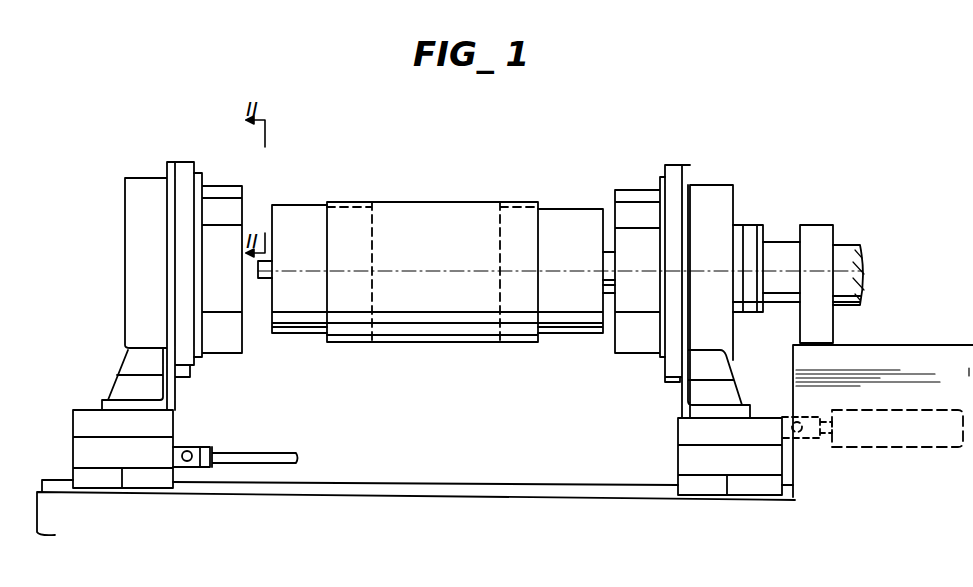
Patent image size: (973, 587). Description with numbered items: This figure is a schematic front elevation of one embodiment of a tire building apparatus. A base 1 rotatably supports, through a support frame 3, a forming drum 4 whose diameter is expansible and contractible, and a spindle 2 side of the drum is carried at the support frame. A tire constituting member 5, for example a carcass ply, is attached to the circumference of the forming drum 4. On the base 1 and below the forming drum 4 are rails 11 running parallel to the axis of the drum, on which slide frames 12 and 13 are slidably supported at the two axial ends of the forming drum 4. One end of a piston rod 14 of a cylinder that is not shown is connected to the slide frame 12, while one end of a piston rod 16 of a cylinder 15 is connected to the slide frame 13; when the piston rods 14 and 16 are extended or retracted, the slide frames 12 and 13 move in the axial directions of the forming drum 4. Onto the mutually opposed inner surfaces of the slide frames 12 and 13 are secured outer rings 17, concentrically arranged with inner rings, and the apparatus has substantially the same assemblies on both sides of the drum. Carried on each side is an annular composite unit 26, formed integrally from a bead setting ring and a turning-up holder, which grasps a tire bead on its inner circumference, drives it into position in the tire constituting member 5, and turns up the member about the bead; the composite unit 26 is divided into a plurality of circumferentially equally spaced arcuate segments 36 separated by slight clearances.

The base 1 is at (921, 345).
The spindle 2 is at (792, 211).
The support frame 3 is at (822, 228).
The forming drum 4 is at (558, 206).
The tire constituting member 5 is at (461, 210).
The rails 11 is at (470, 483).
The slide frame 12 is at (175, 434).
The slide frame 13 is at (673, 440).
The piston rod 14 is at (283, 450).
The cylinder 15 is at (932, 410).
The piston rod 16 is at (828, 440).
The outer ring 17 is at (186, 162).
The annular composite unit 26 is at (243, 186).
The arcuate segments 36 is at (241, 333).